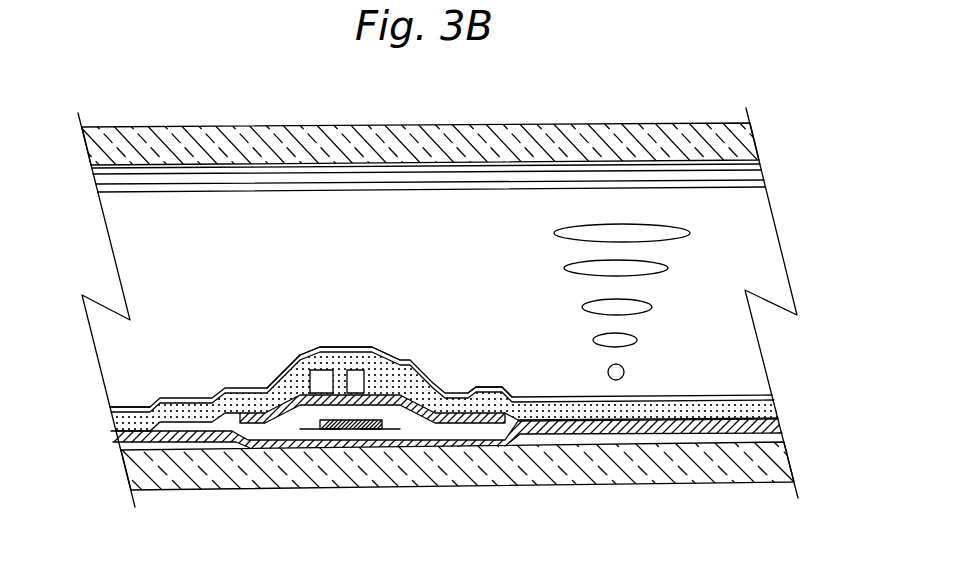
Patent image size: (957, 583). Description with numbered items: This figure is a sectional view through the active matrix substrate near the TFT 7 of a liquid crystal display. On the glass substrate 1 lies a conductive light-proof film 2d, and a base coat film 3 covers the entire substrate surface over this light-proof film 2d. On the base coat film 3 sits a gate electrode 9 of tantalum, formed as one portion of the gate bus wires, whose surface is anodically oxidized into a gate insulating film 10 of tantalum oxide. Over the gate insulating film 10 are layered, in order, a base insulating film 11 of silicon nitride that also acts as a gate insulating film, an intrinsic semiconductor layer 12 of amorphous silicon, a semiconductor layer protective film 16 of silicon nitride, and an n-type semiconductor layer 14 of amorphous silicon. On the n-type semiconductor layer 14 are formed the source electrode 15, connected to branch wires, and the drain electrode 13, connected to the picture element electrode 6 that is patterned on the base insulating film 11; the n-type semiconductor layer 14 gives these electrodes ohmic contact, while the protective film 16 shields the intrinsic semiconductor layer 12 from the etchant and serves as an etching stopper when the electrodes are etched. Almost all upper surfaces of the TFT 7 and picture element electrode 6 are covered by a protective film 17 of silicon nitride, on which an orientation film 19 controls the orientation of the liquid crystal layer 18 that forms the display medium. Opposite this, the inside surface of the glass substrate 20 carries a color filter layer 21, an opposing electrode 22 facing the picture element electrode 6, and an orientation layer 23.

The glass substrate 1 is at (785, 462).
The conductive light-proof film 2d is at (350, 440).
The base coat film 3 is at (780, 438).
The picture element electrode 6 is at (773, 411).
The TFT 7 is at (320, 318).
The gate electrode 9 is at (378, 430).
The gate insulating film 10 is at (310, 430).
The base insulating film 11 is at (773, 424).
The intrinsic semiconductor layer 12 is at (445, 387).
The drain electrode 13 is at (382, 371).
The n-type semiconductor layer 14 is at (268, 386).
The source electrode 15 is at (303, 360).
The semiconductor layer protective film 16 is at (353, 371).
The protective film 17 is at (747, 400).
The liquid crystal layer 18 is at (688, 236).
The orientation film 19 is at (112, 408).
The glass substrate 20 is at (743, 137).
The color filter layer 21 is at (757, 163).
The opposing electrode 22 is at (758, 175).
The orientation layer 23 is at (758, 186).